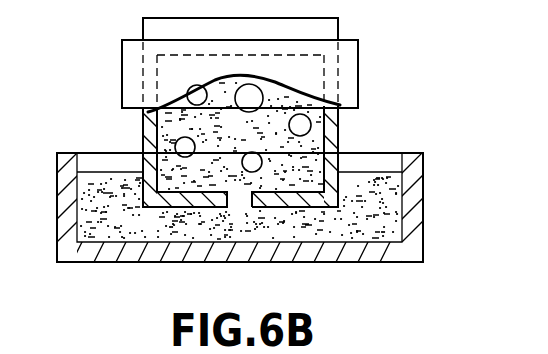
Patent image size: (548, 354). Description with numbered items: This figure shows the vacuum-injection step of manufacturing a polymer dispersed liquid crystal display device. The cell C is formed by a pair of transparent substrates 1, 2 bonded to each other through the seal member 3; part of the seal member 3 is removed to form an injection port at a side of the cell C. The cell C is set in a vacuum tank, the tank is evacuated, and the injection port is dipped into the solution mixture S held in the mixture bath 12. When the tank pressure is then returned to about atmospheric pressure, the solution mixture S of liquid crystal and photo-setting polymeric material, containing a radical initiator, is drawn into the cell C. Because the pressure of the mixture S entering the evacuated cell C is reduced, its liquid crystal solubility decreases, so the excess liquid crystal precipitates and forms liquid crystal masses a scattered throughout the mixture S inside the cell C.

The transparent substrate 1 is at (168, 61).
The transparent substrate 2 is at (335, 27).
The cell C is at (361, 63).
The solution mixture S is at (168, 108).
The liquid crystal mass a is at (252, 100).
The seal member 3 is at (340, 150).
The mixture bath 12 is at (421, 203).